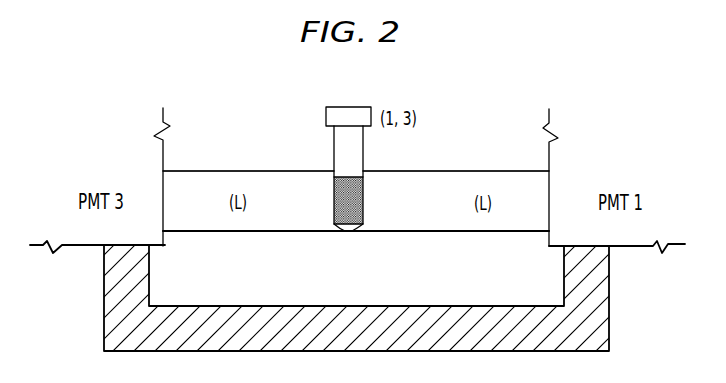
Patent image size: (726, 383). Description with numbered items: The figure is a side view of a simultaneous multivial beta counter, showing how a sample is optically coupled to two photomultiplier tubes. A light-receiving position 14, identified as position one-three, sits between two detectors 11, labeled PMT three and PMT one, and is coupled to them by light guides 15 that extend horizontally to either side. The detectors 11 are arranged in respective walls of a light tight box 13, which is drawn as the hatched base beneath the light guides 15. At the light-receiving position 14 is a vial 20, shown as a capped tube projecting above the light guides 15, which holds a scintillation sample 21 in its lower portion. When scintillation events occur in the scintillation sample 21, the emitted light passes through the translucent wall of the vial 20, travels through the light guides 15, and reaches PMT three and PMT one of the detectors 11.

The detectors 11 is at (88, 233).
The light tight box 13 is at (608, 323).
The light-receiving position 14 is at (351, 107).
The light guides 15 is at (317, 178).
The vial 20 is at (358, 146).
The scintillation sample 21 is at (338, 196).